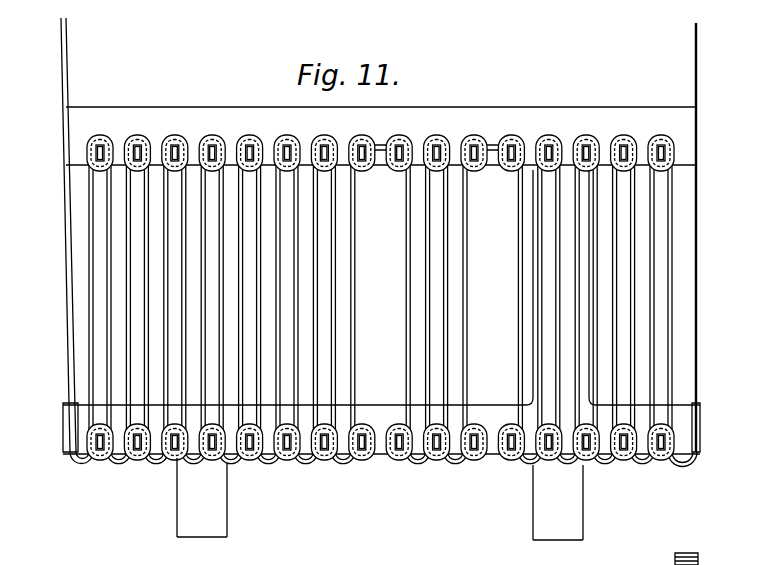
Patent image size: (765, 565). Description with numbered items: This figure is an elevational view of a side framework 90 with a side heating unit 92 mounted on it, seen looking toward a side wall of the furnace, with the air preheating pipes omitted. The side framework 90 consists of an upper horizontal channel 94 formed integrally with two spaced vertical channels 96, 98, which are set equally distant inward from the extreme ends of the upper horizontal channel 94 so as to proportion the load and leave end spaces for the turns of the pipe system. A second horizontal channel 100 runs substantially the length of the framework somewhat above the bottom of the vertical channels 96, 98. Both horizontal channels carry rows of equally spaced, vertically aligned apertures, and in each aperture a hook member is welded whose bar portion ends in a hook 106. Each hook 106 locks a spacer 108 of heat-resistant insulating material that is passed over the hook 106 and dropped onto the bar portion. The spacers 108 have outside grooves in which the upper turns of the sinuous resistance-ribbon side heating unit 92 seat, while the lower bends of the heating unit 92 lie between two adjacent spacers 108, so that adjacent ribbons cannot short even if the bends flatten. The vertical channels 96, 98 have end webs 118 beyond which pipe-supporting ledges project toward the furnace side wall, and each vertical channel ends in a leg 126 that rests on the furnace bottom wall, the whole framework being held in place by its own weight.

The side framework 90 is at (515, 93).
The side heating unit 92 is at (352, 298).
The upper horizontal channel 94 is at (256, 114).
The vertical channel 96 is at (192, 313).
The vertical channel 98 is at (568, 272).
The second horizontal channel 100 is at (63, 425).
The hook 106 is at (312, 145).
The spacer 108 is at (507, 141).
The end web 118 is at (185, 494).
The leg 126 is at (200, 538).